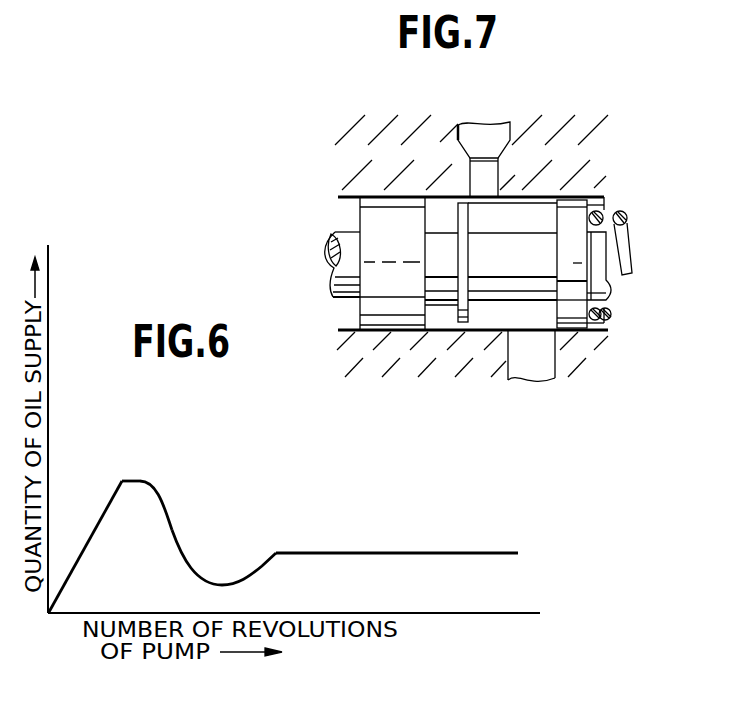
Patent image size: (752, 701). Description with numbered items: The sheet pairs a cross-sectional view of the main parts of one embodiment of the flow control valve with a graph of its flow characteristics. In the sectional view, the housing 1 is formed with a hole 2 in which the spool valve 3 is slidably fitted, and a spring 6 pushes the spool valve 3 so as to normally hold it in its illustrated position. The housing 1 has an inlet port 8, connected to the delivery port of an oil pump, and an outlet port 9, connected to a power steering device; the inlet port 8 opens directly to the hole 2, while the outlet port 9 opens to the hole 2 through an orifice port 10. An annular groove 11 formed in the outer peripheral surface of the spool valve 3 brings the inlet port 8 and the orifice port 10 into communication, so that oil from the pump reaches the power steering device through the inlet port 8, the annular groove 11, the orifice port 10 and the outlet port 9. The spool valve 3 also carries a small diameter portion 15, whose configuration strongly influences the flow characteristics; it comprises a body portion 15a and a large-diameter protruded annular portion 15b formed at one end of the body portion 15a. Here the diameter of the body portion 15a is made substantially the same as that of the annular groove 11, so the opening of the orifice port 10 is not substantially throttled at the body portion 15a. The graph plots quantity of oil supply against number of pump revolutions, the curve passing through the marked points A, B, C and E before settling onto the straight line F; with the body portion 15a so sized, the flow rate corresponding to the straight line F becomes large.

In FIG. 7, the housing 1 is at (603, 200).
In FIG. 7, the hole 2 is at (499, 333).
In FIG. 7, the spool valve 3 is at (356, 215).
In FIG. 7, the spring 6 is at (628, 217).
In FIG. 7, the inlet port 8 is at (481, 148).
In FIG. 7, the outlet port 9 is at (533, 350).
In FIG. 7, the orifice port 10 is at (486, 178).
In FIG. 7, the annular groove 11 is at (527, 233).
In FIG. 7, the small diameter portion 15 is at (437, 226).
In FIG. 7, the body portion 15a is at (446, 230).
In FIG. 7, the large-diameter protruded annular portion 15b is at (463, 236).
In FIG. 6, the curve point A is at (98, 521).
In FIG. 6, the curve point B is at (129, 480).
In FIG. 6, the curve point C is at (170, 529).
In FIG. 6, the curve point E is at (259, 570).
In FIG. 6, the straight line F is at (393, 553).